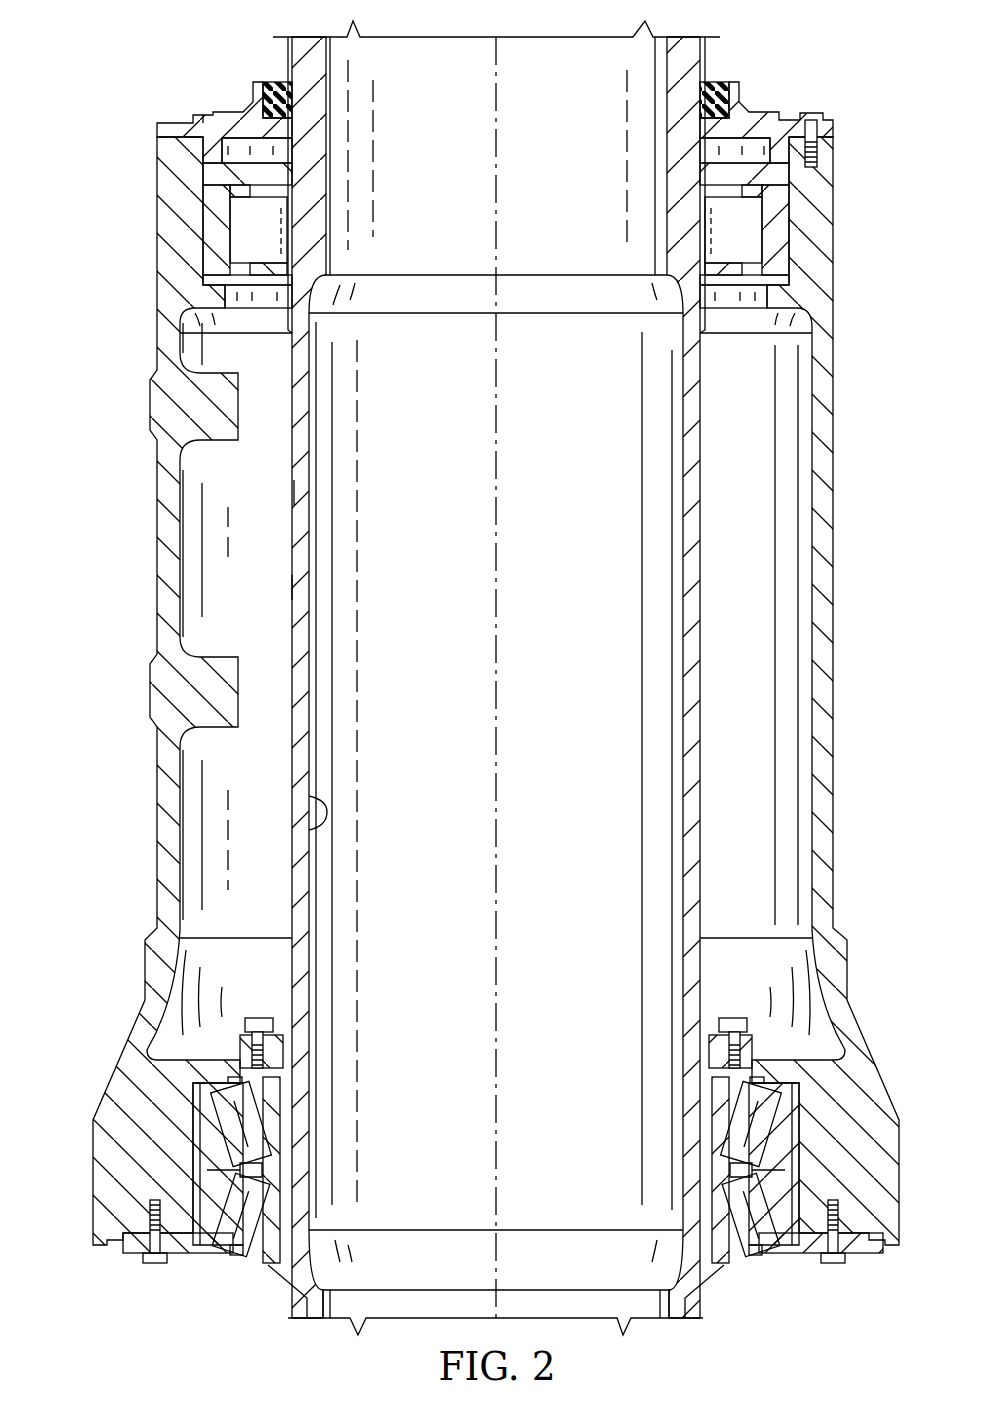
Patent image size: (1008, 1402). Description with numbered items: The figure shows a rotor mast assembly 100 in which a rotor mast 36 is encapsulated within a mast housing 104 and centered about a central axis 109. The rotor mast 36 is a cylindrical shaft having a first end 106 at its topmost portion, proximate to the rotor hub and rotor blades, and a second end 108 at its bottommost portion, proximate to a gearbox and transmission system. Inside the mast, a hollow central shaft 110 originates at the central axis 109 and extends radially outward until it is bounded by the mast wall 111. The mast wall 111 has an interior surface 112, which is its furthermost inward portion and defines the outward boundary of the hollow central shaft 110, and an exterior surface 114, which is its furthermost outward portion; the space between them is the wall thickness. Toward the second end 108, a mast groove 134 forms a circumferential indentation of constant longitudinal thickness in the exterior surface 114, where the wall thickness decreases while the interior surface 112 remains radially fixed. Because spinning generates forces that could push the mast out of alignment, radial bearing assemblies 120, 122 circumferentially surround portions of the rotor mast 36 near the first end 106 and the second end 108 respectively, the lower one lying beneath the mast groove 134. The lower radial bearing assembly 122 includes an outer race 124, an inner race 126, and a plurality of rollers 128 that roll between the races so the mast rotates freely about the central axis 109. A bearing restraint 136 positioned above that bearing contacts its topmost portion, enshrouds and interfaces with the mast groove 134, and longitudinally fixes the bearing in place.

The rotor mast assembly 100 is at (138, 70).
The mast housing 104 is at (165, 617).
The first end 106 is at (295, 51).
The second end 108 is at (264, 1276).
The central axis 109 is at (497, 497).
The hollow central shaft 110 is at (657, 453).
The mast wall 111 is at (298, 497).
The interior surface 112 is at (307, 830).
The exterior surface 114 is at (702, 538).
The radial bearing assembly 120 is at (746, 233).
The radial bearing assembly 122 is at (793, 1153).
The outer race 124 is at (212, 1130).
The inner race 126 is at (275, 1183).
The rollers 128 is at (243, 1112).
The mast groove 134 is at (288, 1042).
The bearing restraint 136 is at (758, 1049).
The rotor mast 36 is at (290, 590).